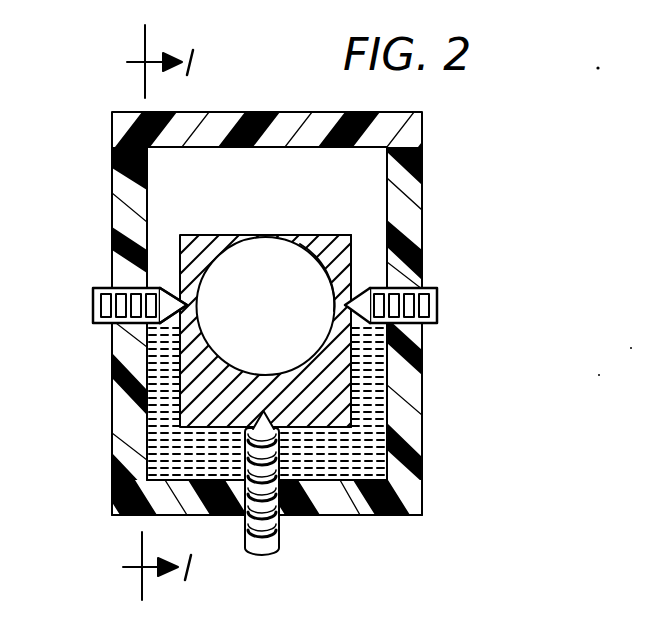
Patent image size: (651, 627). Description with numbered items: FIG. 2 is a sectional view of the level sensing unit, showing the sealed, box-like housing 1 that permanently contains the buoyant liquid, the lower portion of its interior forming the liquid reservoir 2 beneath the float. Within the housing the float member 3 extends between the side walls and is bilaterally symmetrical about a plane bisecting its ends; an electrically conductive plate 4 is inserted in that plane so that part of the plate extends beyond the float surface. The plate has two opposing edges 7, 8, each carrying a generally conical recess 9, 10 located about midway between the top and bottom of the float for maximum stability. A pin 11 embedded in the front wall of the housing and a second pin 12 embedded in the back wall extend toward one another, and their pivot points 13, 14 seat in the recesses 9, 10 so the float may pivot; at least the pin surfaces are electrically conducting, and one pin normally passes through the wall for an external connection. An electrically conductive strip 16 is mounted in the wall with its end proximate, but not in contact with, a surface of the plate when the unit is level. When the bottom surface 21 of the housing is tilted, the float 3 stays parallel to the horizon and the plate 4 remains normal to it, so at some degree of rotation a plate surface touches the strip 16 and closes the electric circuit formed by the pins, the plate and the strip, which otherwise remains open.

The sealed housing 1 is at (400, 212).
The liquid reservoir 2 is at (178, 424).
The float member 3 is at (268, 270).
The electrically conductive plate 4 is at (383, 517).
The edge of plate 7 is at (187, 441).
The edge of plate 8 is at (350, 396).
The recess 9 is at (185, 303).
The recess 10 is at (335, 255).
The pin 11 is at (93, 305).
The second pin 12 is at (437, 303).
The pivot point 13 is at (180, 325).
The pivot point 14 is at (345, 305).
The electrically conductive strip 16 is at (263, 543).
The bottom surface of housing 21 is at (317, 517).